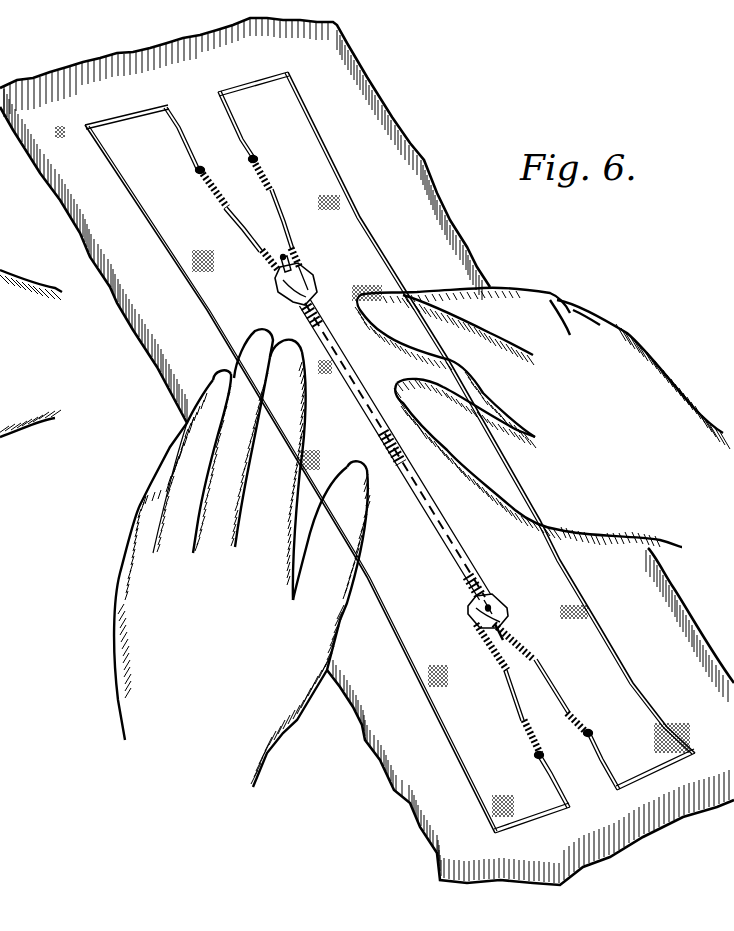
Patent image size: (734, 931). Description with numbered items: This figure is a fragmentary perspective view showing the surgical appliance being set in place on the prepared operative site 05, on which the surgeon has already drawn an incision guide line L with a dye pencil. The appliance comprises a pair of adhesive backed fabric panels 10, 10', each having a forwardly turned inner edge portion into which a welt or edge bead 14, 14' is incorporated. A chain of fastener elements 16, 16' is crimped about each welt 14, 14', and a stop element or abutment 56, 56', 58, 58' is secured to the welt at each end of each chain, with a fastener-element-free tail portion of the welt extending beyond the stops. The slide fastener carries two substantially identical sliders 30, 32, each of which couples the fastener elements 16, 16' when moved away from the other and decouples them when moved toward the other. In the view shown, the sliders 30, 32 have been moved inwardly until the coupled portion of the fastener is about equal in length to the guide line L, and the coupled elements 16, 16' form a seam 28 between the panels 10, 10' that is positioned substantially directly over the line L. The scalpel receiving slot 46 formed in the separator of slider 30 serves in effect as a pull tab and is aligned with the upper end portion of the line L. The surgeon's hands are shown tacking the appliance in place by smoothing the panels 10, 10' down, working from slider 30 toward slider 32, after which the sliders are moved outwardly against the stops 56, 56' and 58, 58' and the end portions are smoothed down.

The fabric sheet 05 is at (370, 112).
The adhesive backed fabric panel 10 is at (327, 469).
The adhesive backed fabric panel 10' is at (456, 431).
The welt or edge bead 14 is at (380, 442).
The welt or edge bead 14' is at (410, 455).
The fastener elements 16 is at (358, 461).
The fastener elements 16' is at (420, 446).
The stop element or abutment 56 is at (178, 161).
The stop element or abutment 56' is at (269, 139).
The stop element or abutment 58 is at (519, 769).
The stop element or abutment 58' is at (607, 714).
The seam 28 is at (397, 450).
The incision guide line L is at (423, 497).
The slider 30 is at (303, 282).
The scalpel receiving slot 46 is at (292, 266).
The slider 32 is at (497, 610).